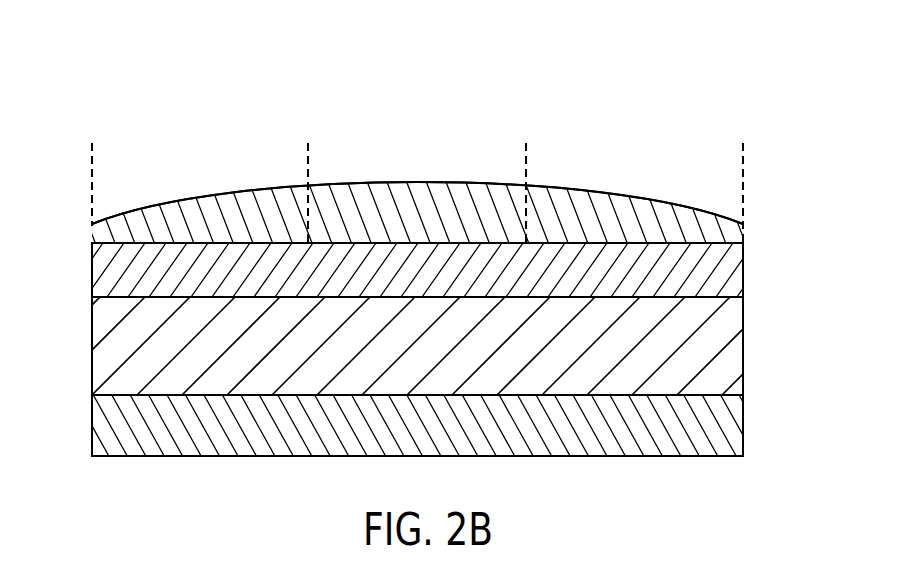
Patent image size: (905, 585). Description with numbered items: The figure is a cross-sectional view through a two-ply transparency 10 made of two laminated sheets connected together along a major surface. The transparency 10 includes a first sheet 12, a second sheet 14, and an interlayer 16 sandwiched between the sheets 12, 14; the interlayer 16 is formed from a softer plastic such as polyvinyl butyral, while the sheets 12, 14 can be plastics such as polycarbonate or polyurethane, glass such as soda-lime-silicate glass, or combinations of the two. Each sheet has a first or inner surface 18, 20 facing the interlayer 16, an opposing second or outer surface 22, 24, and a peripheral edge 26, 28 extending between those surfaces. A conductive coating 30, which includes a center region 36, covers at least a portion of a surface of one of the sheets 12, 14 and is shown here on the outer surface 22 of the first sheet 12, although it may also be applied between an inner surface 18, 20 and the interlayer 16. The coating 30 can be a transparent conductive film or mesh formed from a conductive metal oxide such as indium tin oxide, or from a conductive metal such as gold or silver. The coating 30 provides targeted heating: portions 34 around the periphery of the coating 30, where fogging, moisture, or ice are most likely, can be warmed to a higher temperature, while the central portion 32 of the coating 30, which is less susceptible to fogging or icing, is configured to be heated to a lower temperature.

The transparency 10 is at (680, 74).
The first sheet 12 is at (743, 268).
The second sheet 14 is at (743, 430).
The interlayer 16 is at (743, 335).
The inner surface 18 is at (716, 298).
The inner surface 20 is at (718, 390).
The outer surface 22 is at (716, 240).
The outer surface 24 is at (707, 456).
The peripheral edge 26 is at (92, 271).
The peripheral edge 28 is at (92, 425).
The conductive coating 30 is at (454, 192).
The central portion 32 is at (525, 92).
The peripheral portions 34 is at (302, 121).
The center region 36 is at (387, 184).